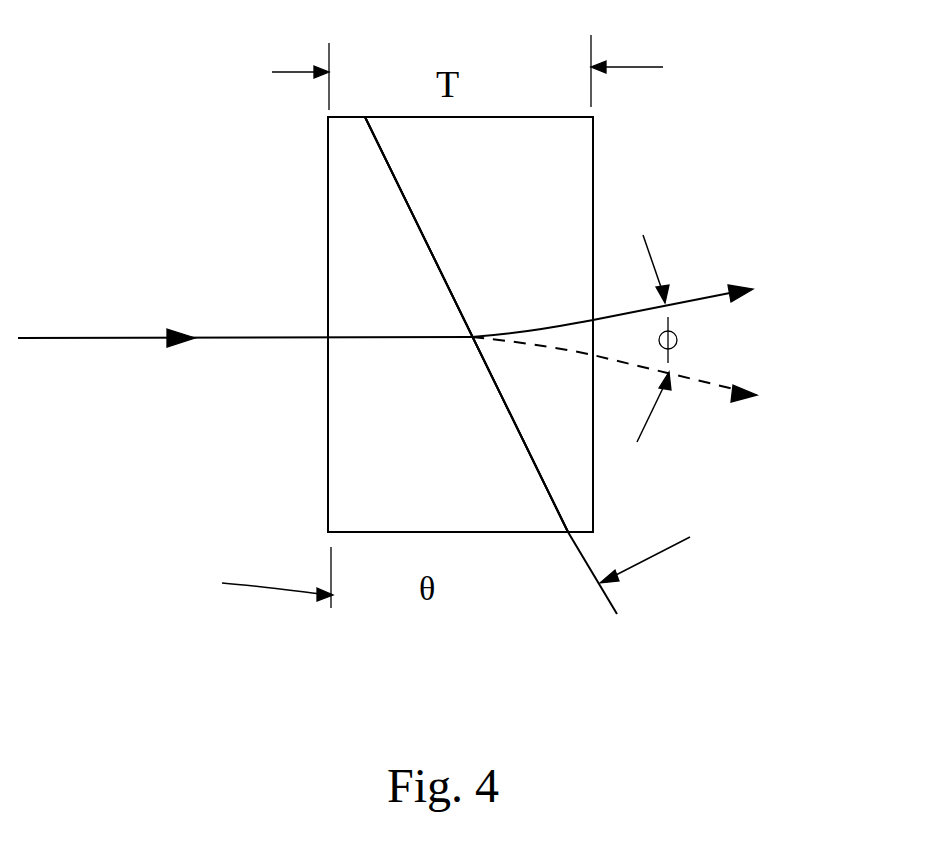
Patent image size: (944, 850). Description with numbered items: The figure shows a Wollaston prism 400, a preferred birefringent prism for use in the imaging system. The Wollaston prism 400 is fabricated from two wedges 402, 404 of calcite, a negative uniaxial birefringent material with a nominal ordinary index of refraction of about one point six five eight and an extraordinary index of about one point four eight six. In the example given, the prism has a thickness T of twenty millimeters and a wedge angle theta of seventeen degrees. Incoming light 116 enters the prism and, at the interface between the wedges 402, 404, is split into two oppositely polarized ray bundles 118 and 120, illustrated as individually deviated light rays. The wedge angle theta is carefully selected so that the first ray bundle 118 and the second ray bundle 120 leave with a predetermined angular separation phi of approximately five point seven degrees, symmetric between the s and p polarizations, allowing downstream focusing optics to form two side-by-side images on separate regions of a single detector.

The Wollaston prism 400 is at (756, 87).
The wedge 402 is at (391, 277).
The wedge 404 is at (566, 167).
The input light beam 116 is at (88, 341).
The first ray bundle 118 is at (715, 294).
The second ray bundle 120 is at (717, 390).